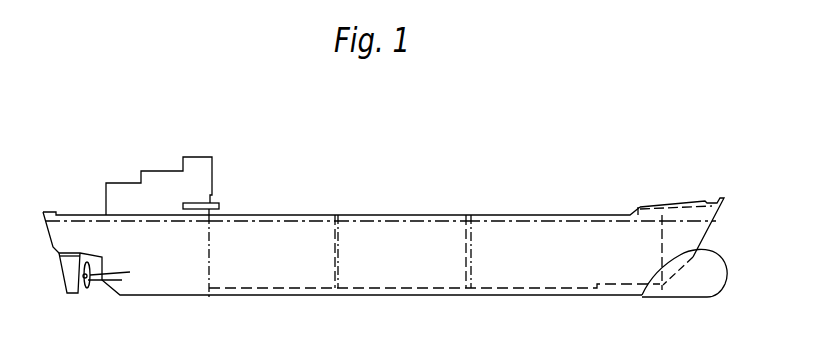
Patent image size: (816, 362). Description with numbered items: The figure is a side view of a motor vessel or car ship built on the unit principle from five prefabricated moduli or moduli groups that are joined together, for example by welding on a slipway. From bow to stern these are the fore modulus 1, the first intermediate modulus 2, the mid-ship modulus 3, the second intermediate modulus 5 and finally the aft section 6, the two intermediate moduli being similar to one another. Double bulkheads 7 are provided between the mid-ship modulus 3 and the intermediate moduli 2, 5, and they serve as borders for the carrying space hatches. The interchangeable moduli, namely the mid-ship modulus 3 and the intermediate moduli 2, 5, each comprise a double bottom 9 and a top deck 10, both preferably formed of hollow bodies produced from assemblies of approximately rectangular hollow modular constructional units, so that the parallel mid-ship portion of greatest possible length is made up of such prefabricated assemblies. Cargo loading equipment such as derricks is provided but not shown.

The fore modulus 1 is at (669, 228).
The first intermediate modulus 2 is at (560, 233).
The mid-ship modulus 3 is at (402, 233).
The second intermediate modulus 5 is at (263, 233).
The aft section 6 is at (89, 232).
The double bulkheads 7 is at (340, 267).
The double bottom 9 is at (403, 288).
The top deck 10 is at (332, 220).